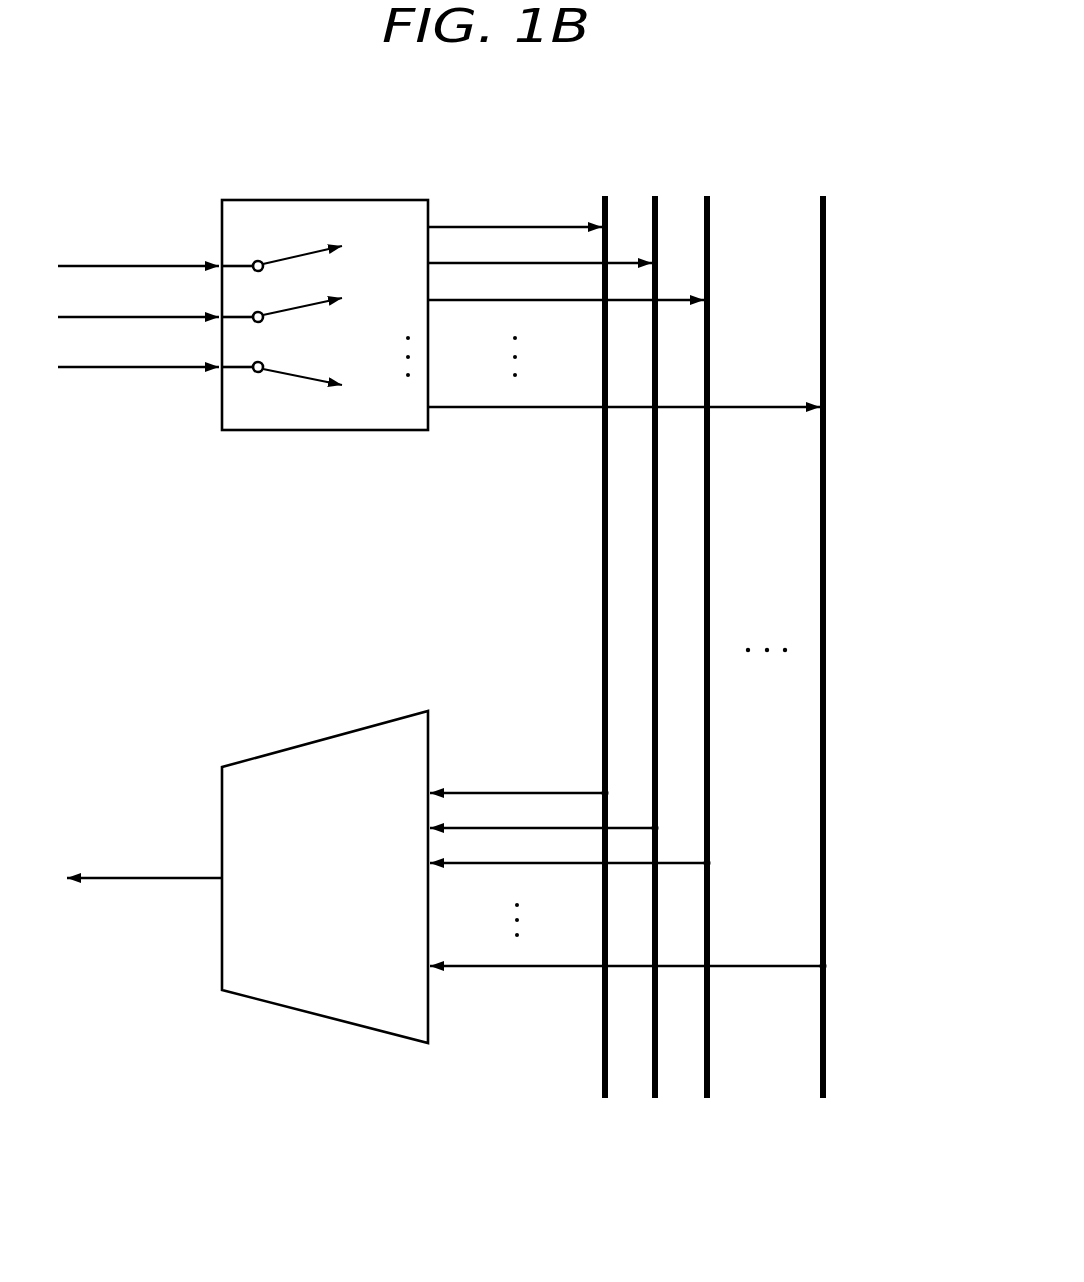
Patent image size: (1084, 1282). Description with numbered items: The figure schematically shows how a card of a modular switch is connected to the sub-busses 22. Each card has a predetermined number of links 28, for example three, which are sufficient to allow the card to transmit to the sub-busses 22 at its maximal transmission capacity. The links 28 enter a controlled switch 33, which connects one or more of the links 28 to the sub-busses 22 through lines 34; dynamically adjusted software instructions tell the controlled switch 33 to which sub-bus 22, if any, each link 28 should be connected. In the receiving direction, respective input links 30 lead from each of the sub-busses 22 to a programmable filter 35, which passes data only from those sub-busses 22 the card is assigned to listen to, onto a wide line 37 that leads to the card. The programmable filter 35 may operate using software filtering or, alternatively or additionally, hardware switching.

The sub-busses 22 is at (607, 998).
The links 28 is at (148, 367).
The input links 30 is at (528, 863).
The controlled switch 33 is at (326, 198).
The lines 34 is at (537, 300).
The programmable filter 35 is at (320, 737).
The wide line 37 is at (152, 874).